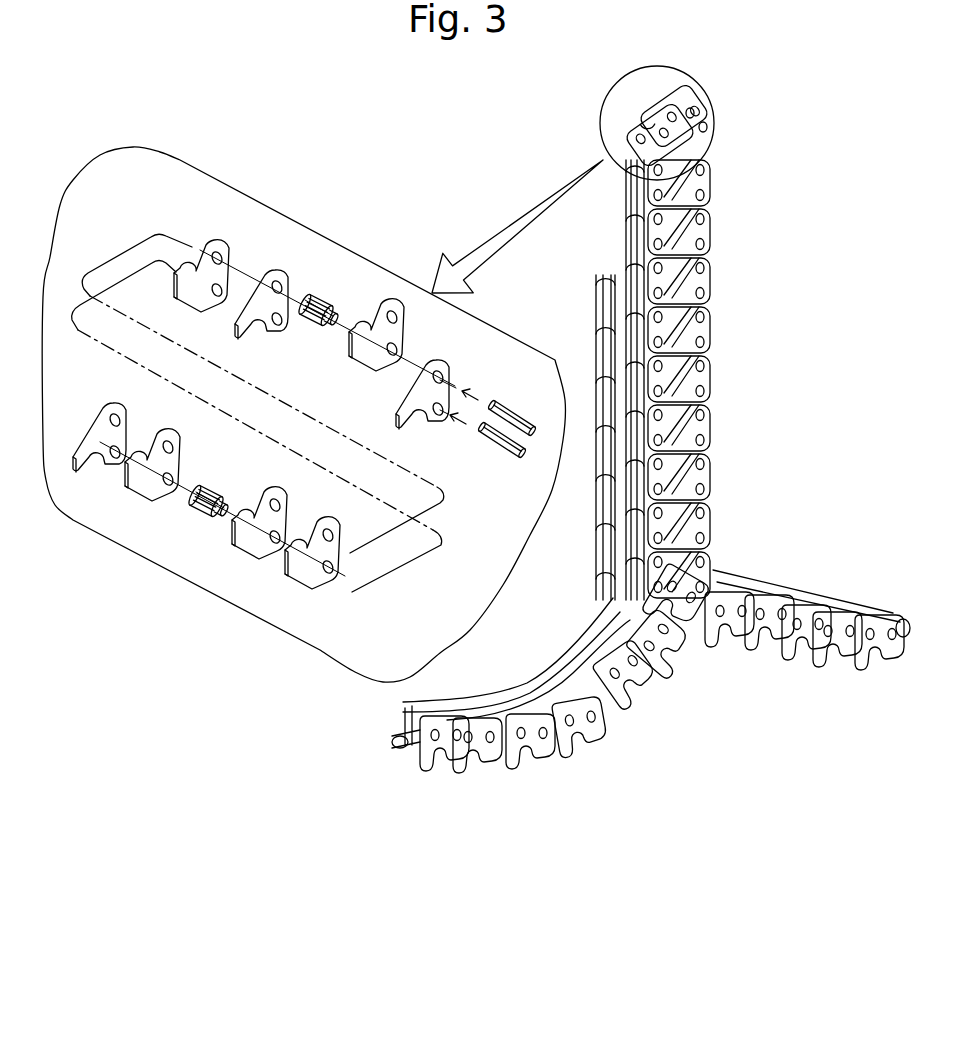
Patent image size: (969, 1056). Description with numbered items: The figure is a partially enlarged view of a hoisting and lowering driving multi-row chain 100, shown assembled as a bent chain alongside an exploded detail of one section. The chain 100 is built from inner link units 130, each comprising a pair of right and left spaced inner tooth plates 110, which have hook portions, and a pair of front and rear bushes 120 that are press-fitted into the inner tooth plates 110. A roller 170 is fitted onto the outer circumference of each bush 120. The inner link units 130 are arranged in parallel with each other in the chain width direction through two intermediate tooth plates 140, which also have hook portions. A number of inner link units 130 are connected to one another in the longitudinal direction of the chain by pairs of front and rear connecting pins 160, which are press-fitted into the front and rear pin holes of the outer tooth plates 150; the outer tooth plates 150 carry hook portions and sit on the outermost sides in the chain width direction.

The chain 100 is at (737, 762).
The inner tooth plate 110 is at (281, 273).
The bush 120 is at (337, 300).
The inner link unit 130 is at (287, 153).
The intermediate tooth plate 140 is at (221, 243).
The outer tooth plate 150 is at (444, 363).
The connecting pin 160 is at (513, 412).
The roller 170 is at (311, 327).